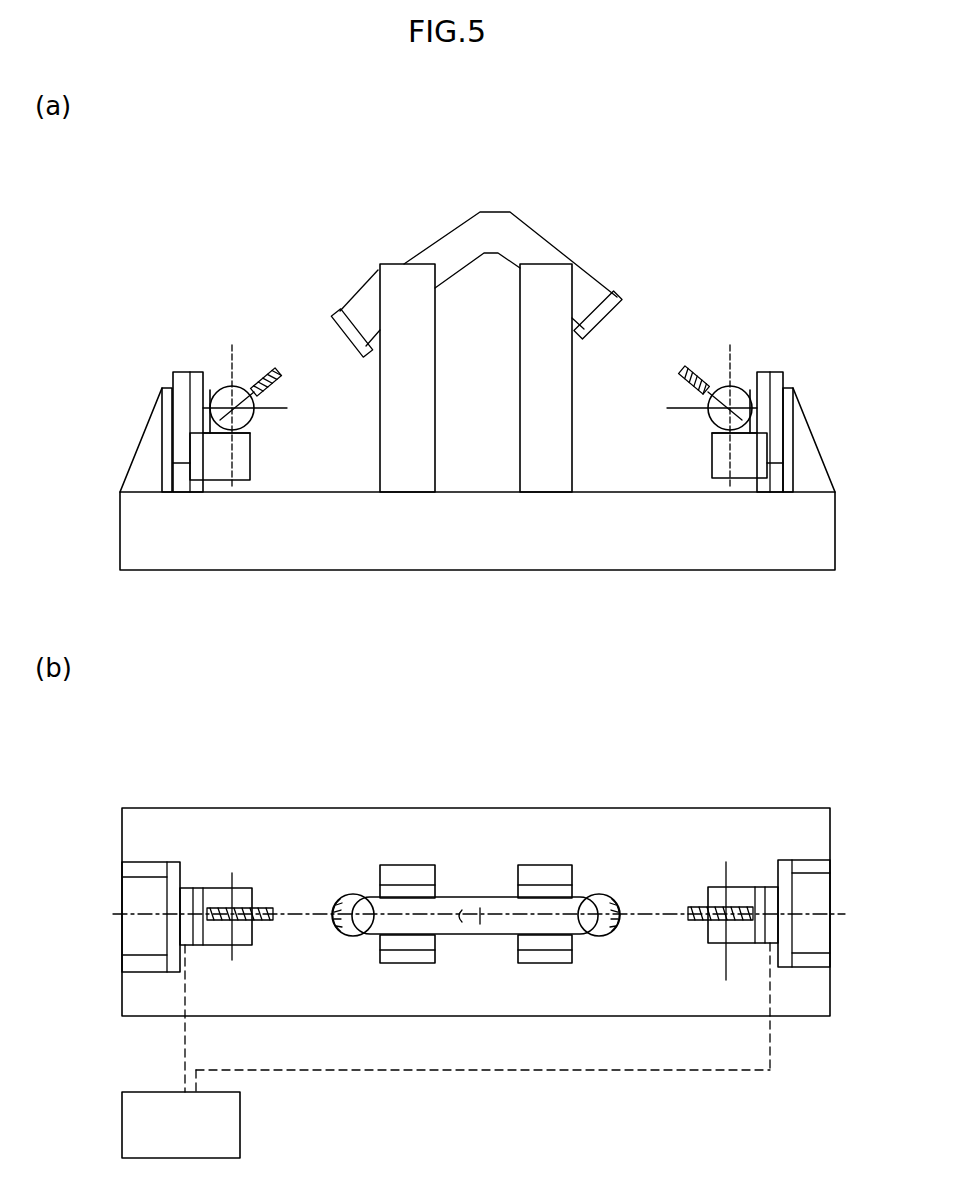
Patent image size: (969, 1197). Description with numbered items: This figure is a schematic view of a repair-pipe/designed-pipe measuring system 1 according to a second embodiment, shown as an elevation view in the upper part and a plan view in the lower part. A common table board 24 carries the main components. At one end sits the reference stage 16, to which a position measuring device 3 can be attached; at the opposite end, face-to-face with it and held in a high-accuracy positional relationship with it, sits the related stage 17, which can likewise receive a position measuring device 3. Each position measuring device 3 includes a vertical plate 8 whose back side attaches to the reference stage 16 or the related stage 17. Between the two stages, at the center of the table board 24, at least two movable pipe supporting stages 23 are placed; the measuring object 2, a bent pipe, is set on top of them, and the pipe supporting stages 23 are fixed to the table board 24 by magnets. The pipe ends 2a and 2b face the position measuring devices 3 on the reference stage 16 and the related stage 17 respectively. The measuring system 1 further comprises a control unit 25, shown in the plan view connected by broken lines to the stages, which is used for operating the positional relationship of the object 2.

The repair pipe/designed pipe measuring system 1 is at (683, 223).
The object 2 is at (463, 240).
The first end of pipe 2a is at (342, 323).
The second end of pipe 2b is at (618, 308).
The position measuring device 3 is at (238, 375).
The vertical plate 8 is at (183, 380).
The reference stage 16 is at (150, 453).
The related stage 17 is at (807, 462).
The pipe supporting stage 23 is at (545, 418).
The table board 24 is at (384, 542).
The control unit 25 is at (236, 1135).